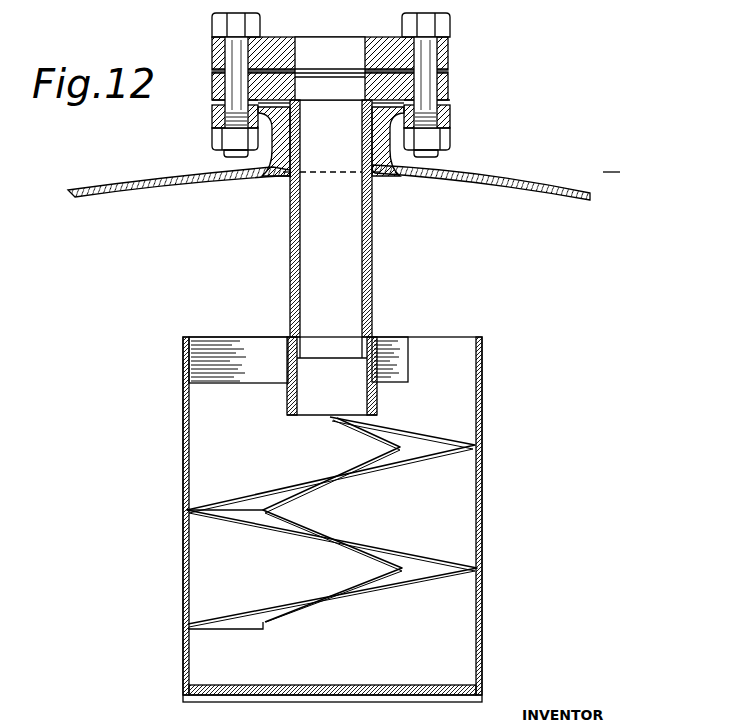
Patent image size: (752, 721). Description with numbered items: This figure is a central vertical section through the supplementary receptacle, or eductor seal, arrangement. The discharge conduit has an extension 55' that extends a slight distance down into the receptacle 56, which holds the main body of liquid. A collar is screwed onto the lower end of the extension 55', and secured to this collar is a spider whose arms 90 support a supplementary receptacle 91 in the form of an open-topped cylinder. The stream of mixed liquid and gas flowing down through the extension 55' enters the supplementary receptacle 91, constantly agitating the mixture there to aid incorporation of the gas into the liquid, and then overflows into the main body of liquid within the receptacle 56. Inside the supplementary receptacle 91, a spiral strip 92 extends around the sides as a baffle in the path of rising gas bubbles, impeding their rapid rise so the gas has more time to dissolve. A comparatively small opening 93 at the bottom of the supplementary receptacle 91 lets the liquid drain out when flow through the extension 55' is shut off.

The extension of the conduit 55' is at (354, 257).
The receptacle 56 is at (497, 170).
The spider arms 90 is at (250, 345).
The supplementary receptacle 91 is at (482, 498).
The spiral strip 92 is at (415, 557).
The opening 93 is at (183, 680).